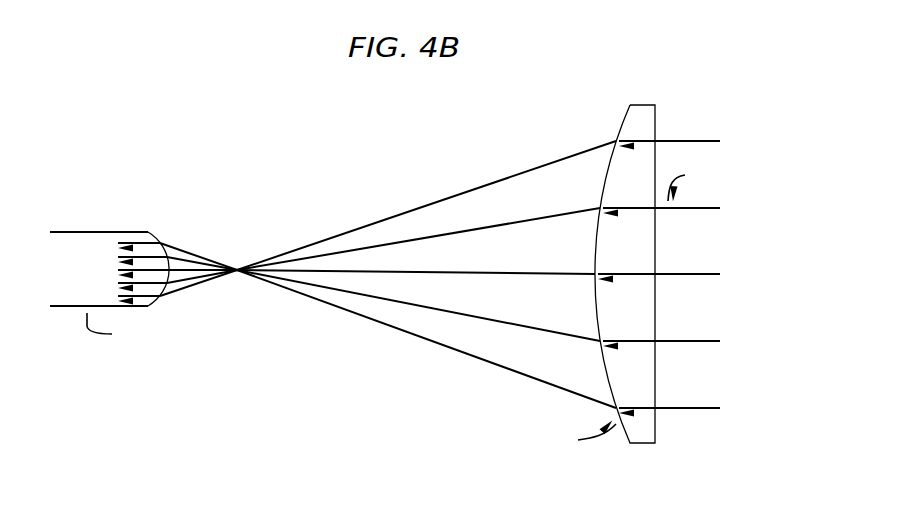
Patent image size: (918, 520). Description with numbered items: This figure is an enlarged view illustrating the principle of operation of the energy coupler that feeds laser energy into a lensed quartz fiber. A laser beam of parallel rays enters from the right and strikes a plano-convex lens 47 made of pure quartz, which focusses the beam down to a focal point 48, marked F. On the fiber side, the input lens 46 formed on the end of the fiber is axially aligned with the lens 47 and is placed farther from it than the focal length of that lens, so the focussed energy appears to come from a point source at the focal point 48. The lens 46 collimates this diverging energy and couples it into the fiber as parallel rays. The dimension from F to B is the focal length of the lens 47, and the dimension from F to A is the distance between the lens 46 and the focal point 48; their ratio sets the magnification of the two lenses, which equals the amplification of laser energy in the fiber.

The input lens 46 is at (164, 231).
The plano-convex lens 47 is at (650, 105).
The focal point 48 is at (237, 259).